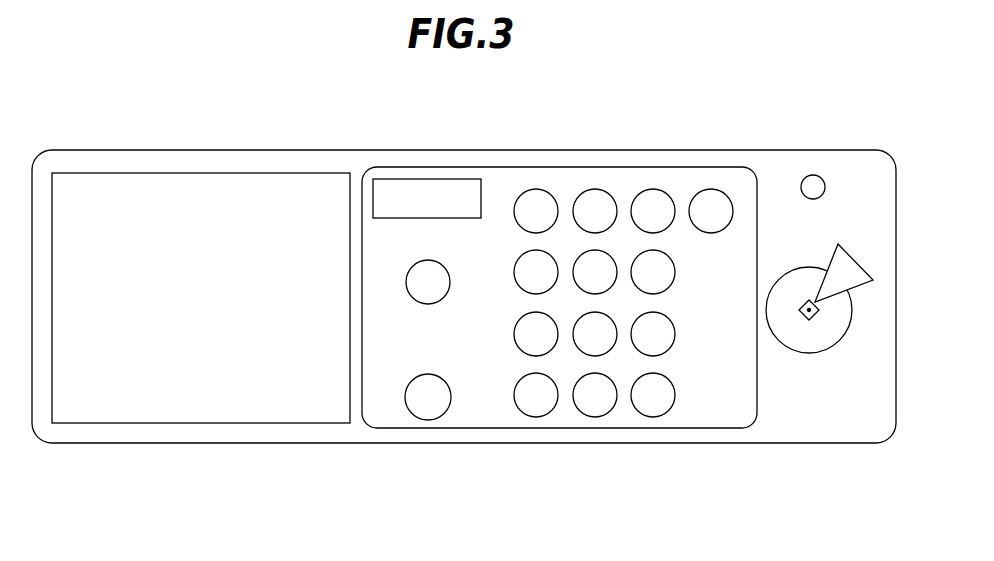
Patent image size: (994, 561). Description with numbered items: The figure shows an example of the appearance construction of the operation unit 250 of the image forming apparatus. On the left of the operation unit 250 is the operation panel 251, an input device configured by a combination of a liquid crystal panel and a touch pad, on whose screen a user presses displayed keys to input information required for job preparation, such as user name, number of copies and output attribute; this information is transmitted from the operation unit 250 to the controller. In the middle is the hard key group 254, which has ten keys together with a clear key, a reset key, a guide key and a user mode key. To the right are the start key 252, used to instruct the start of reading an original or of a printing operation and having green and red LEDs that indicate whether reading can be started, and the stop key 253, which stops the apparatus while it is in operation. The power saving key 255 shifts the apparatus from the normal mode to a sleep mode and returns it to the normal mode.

The operation unit 250 is at (198, 444).
The operation panel 251 is at (330, 173).
The start key 252 is at (805, 353).
The stop key 253 is at (853, 258).
The hard key group 254 is at (684, 175).
The power saving key 255 is at (814, 175).